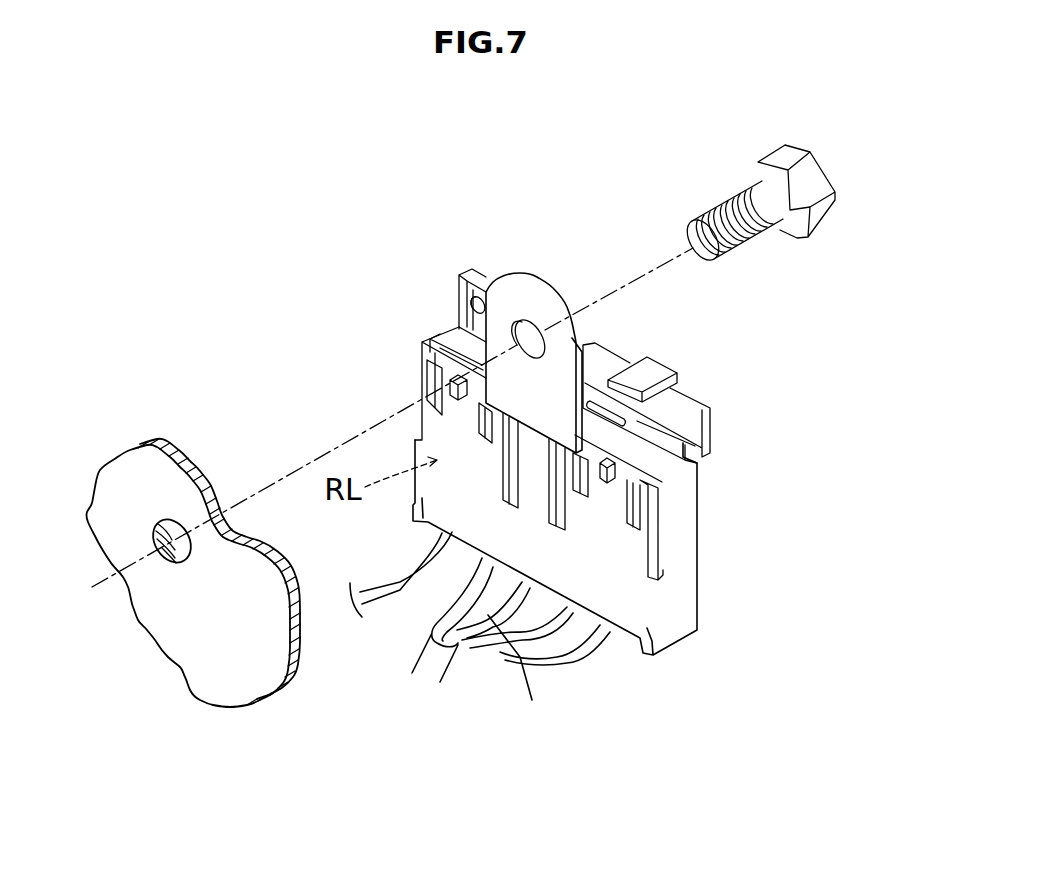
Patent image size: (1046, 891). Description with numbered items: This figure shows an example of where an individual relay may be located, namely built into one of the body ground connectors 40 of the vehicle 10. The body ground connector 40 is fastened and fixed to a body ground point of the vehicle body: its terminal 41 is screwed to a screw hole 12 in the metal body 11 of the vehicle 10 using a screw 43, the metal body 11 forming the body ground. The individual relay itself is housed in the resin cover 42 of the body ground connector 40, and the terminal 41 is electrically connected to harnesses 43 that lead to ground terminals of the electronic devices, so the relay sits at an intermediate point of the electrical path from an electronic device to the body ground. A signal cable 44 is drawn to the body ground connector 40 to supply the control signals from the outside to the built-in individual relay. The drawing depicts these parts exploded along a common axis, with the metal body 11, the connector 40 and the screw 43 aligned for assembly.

The vehicle 10 is at (139, 434).
The metal body 11 is at (177, 490).
The screw hole 12 is at (173, 562).
The body ground connector 40 is at (392, 343).
The terminal 41 is at (523, 305).
The resin cover 42 is at (697, 522).
The screw 43 is at (793, 155).
The signal cable 44 is at (382, 588).